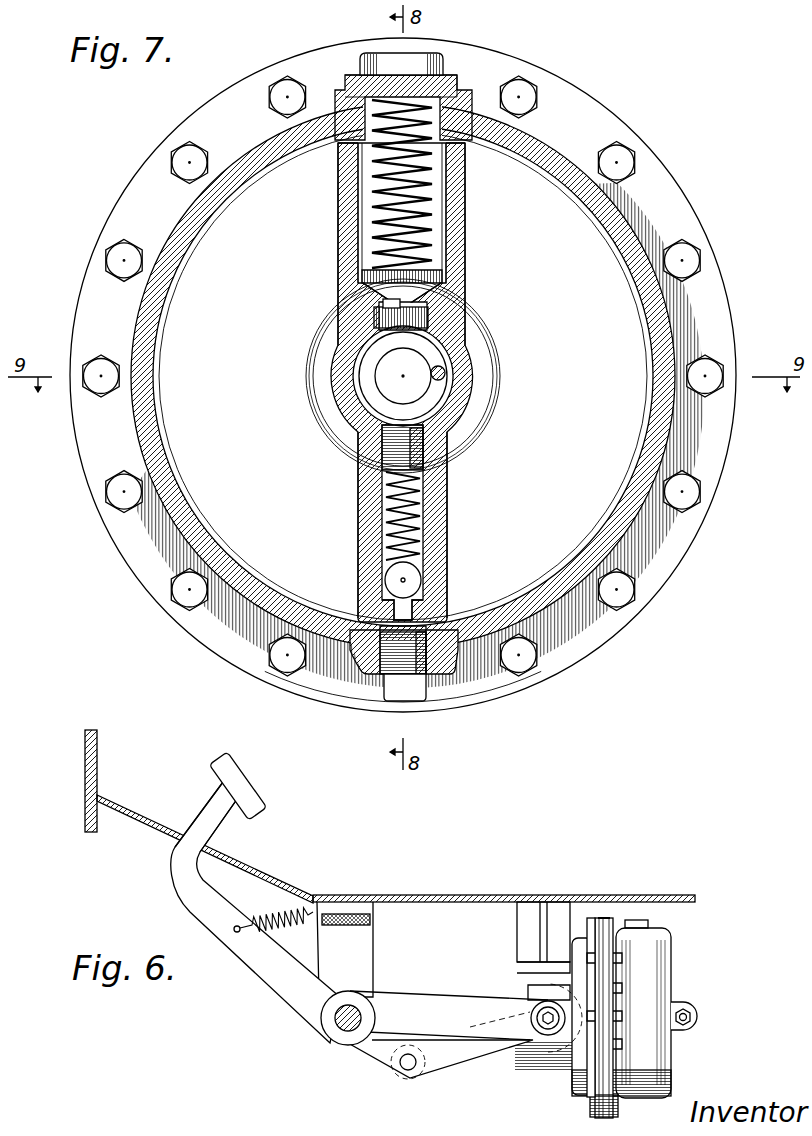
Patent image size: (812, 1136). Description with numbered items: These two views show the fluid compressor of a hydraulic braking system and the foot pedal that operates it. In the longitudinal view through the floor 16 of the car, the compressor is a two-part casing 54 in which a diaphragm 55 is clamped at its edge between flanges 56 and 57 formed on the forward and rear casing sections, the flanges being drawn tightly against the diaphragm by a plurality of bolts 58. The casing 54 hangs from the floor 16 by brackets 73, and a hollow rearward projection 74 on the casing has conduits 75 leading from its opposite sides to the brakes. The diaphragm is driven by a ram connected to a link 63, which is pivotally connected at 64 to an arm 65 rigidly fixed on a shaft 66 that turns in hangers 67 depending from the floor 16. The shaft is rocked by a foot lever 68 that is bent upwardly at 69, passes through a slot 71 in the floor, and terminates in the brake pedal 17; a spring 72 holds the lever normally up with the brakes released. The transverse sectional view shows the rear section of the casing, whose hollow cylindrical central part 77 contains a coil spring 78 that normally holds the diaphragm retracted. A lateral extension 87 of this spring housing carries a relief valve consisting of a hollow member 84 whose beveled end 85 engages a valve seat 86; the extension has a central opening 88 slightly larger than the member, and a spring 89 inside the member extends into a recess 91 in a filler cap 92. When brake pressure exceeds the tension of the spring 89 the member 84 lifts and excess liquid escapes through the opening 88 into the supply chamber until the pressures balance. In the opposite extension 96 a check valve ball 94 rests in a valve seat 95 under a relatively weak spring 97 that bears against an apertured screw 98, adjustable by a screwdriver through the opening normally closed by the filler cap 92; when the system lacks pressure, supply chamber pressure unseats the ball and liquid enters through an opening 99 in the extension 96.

In FIG. 6, the floor 16 is at (442, 895).
In FIG. 6, the brake pedal 17 is at (246, 790).
In FIG. 6, the two-part casing 54 is at (662, 968).
In FIG. 6, the diaphragm 55 is at (605, 918).
In FIG. 6, the flange 56 is at (590, 918).
In FIG. 7, the flange 57 is at (728, 452).
In FIG. 6, the flange 57 is at (612, 918).
In FIG. 7, the bolts 58 is at (522, 96).
In FIG. 6, the bolts 58 is at (622, 989).
In FIG. 6, the link 63 is at (495, 1062).
In FIG. 6, the pivot 64 is at (406, 1070).
In FIG. 6, the arm 65 is at (372, 1066).
In FIG. 6, the shaft 66 is at (345, 1020).
In FIG. 6, the hangers 67 is at (360, 970).
In FIG. 6, the foot lever 68 is at (257, 968).
In FIG. 6, the upward bend 69 is at (176, 860).
In FIG. 6, the slot 71 is at (160, 838).
In FIG. 6, the spring 72 is at (278, 916).
In FIG. 6, the brackets 73 is at (522, 938).
In FIG. 6, the hollow rearward projection 74 is at (688, 1005).
In FIG. 7, the conduits 75 is at (410, 62).
In FIG. 6, the conduits 75 is at (692, 1018).
In FIG. 7, the cylindrical central part 77 is at (462, 357).
In FIG. 7, the coil spring 78 is at (432, 405).
In FIG. 7, the hollow valve member 84 is at (440, 226).
In FIG. 7, the beveled end 85 is at (446, 291).
In FIG. 7, the valve seat 86 is at (372, 300).
In FIG. 7, the lateral extension 87 is at (340, 213).
In FIG. 7, the central opening 88 is at (445, 207).
In FIG. 7, the spring 89 is at (372, 168).
In FIG. 7, the recess 91 is at (452, 77).
In FIG. 7, the filler cap 92 is at (448, 85).
In FIG. 7, the ball 94 is at (448, 566).
In FIG. 7, the valve seat 95 is at (410, 592).
In FIG. 7, the extension 96 is at (440, 527).
In FIG. 7, the spring 97 is at (416, 516).
In FIG. 7, the apertured screw 98 is at (414, 460).
In FIG. 7, the opening 99 is at (400, 620).